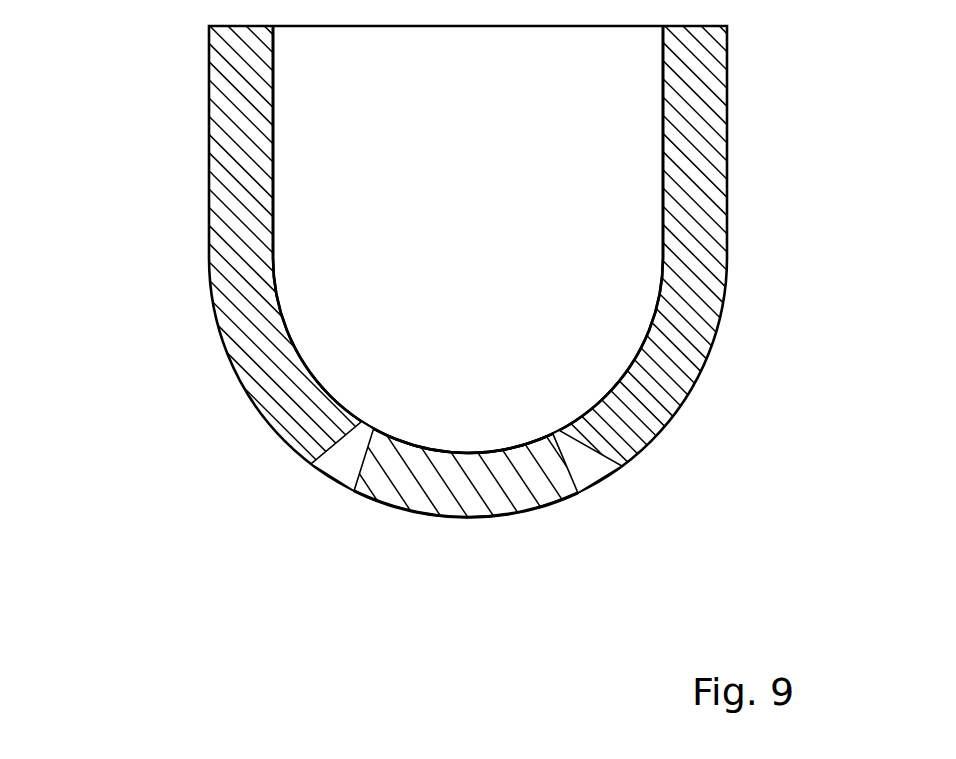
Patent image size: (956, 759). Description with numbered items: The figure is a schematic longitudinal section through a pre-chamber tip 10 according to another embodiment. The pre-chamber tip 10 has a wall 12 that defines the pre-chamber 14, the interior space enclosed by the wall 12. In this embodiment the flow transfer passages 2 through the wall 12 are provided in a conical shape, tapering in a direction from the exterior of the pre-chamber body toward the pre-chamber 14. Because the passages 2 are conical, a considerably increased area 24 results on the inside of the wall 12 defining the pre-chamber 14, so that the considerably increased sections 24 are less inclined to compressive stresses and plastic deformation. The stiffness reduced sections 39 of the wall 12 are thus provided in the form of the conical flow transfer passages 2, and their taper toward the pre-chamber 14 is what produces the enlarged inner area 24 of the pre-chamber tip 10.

The pre-chamber tip 10 is at (478, 379).
The wall 12 is at (710, 156).
The pre-chamber 14 is at (469, 216).
The considerably increased area 24 is at (483, 470).
The flow transfer passage 2 is at (348, 460).
The stiffness reduced section 39 is at (647, 492).